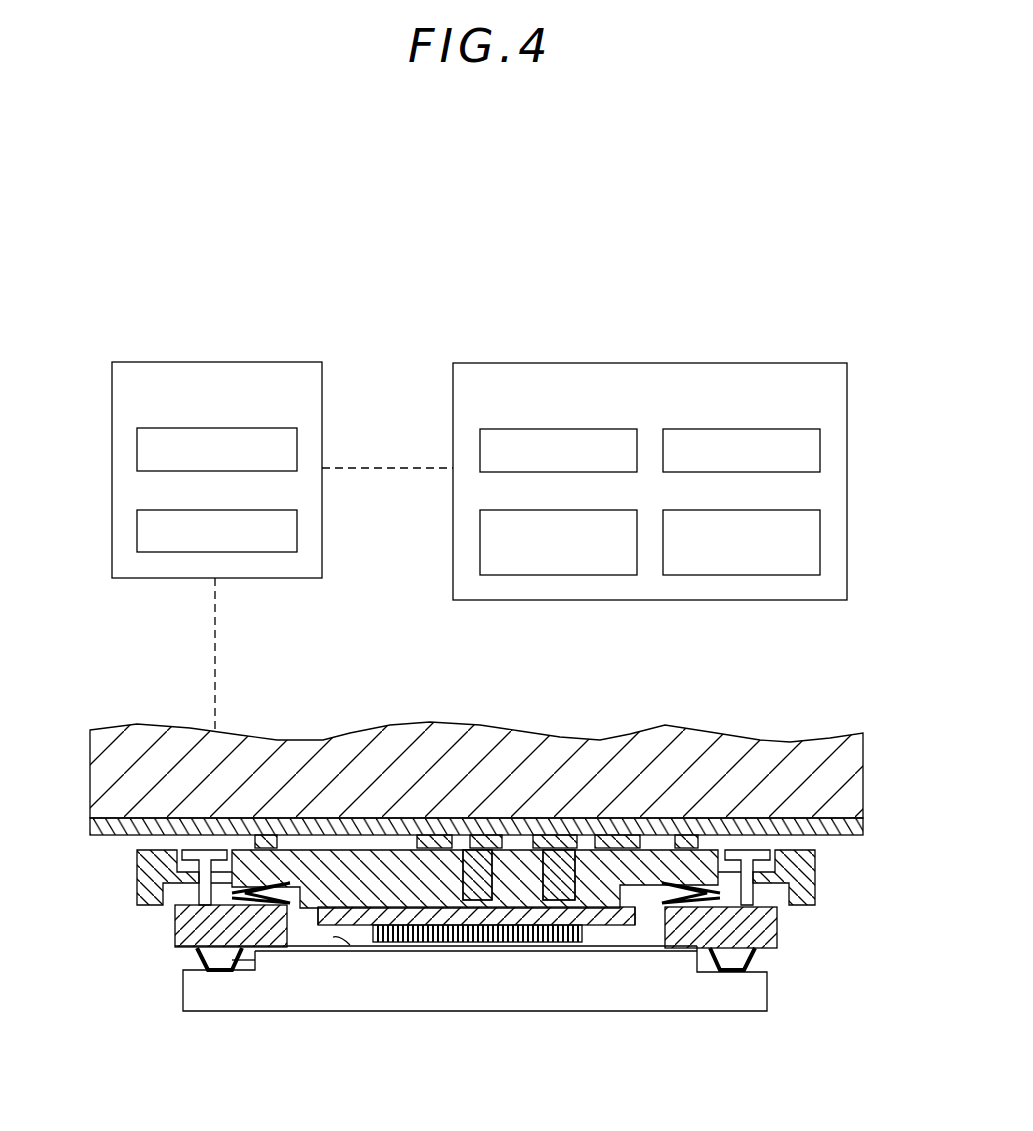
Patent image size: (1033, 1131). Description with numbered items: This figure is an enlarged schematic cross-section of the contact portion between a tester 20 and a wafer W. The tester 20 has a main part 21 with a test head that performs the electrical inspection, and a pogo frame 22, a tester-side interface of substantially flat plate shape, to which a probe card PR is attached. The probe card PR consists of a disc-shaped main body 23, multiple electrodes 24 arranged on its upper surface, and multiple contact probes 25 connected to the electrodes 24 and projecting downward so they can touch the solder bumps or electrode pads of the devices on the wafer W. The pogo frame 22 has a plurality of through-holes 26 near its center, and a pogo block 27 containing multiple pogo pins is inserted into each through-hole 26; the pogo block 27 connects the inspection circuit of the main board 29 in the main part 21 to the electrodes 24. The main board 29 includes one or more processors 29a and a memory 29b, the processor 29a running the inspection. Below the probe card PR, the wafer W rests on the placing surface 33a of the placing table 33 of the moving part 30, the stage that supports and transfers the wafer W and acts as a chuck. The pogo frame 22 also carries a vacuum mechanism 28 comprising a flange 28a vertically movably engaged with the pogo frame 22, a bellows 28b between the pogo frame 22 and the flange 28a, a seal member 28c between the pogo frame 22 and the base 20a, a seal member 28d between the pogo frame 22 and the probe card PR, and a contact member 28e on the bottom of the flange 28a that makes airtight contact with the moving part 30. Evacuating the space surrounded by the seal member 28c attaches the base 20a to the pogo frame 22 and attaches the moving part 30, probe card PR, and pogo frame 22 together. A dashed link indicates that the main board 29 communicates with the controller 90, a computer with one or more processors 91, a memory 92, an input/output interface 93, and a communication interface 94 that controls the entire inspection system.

The main board 29 is at (262, 363).
The processor 29a is at (240, 429).
The memory 29b is at (240, 511).
The controller 90 is at (785, 364).
The processor 91 is at (578, 430).
The memory 92 is at (762, 430).
The input/output interface 93 is at (578, 511).
The communication interface 94 is at (762, 511).
The main part 21 is at (134, 702).
The tester 20 is at (875, 730).
The base 20a is at (137, 836).
The pogo frame 22 is at (603, 900).
The main body 23 is at (430, 916).
The electrodes 24 is at (468, 933).
The contact probes 25 is at (398, 918).
The through-holes 26 is at (596, 858).
The pogo block 27 is at (548, 897).
The probe card PR is at (400, 676).
The wafer W is at (680, 946).
The placing table 33 is at (452, 988).
The moving part 30 is at (475, 999).
The placing surface 33a is at (333, 937).
The vacuum mechanism 28 is at (163, 951).
The flange 28a is at (190, 930).
The bellows 28b is at (200, 882).
The seal member 28c is at (327, 900).
The seal member 28d is at (362, 918).
The contact member 28e is at (277, 957).